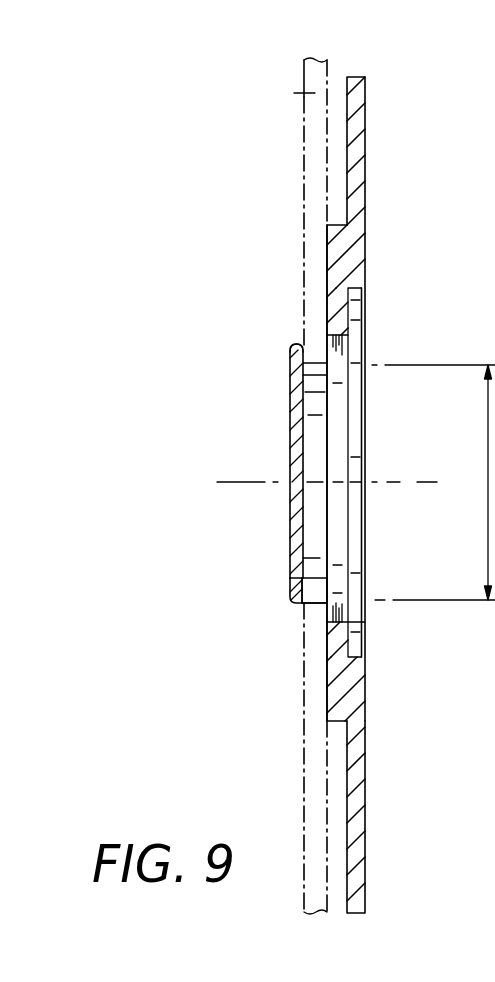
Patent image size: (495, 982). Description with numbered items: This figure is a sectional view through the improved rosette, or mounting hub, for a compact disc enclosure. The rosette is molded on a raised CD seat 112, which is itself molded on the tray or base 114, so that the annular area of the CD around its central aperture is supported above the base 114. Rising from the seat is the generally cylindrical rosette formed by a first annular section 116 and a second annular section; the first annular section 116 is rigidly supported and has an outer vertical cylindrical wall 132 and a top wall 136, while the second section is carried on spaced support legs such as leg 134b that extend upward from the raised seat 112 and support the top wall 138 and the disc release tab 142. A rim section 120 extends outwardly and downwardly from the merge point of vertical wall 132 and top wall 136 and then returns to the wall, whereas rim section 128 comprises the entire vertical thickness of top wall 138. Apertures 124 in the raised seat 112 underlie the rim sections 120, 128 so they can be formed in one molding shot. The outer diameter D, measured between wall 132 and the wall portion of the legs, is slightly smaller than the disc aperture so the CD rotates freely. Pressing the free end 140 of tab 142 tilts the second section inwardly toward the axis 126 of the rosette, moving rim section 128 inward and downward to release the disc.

The compact disc CD is at (293, 92).
The raised CD seat 112 is at (347, 700).
The tray or base 114 is at (357, 833).
The first annular section 116 is at (292, 587).
The rim section 120 is at (300, 603).
The apertures 124 is at (365, 622).
The axis of rosette 126 is at (403, 479).
The rim section 128 is at (292, 364).
The outer vertical cylindrical wall 132 is at (312, 606).
The support leg 134b is at (316, 365).
The top wall of first annular section 136 is at (292, 598).
The top wall of second annular section 138 is at (290, 347).
The free end of tab 140 is at (290, 515).
The disc release tab 142 is at (290, 437).
The outer diameter of rosette D is at (433, 482).